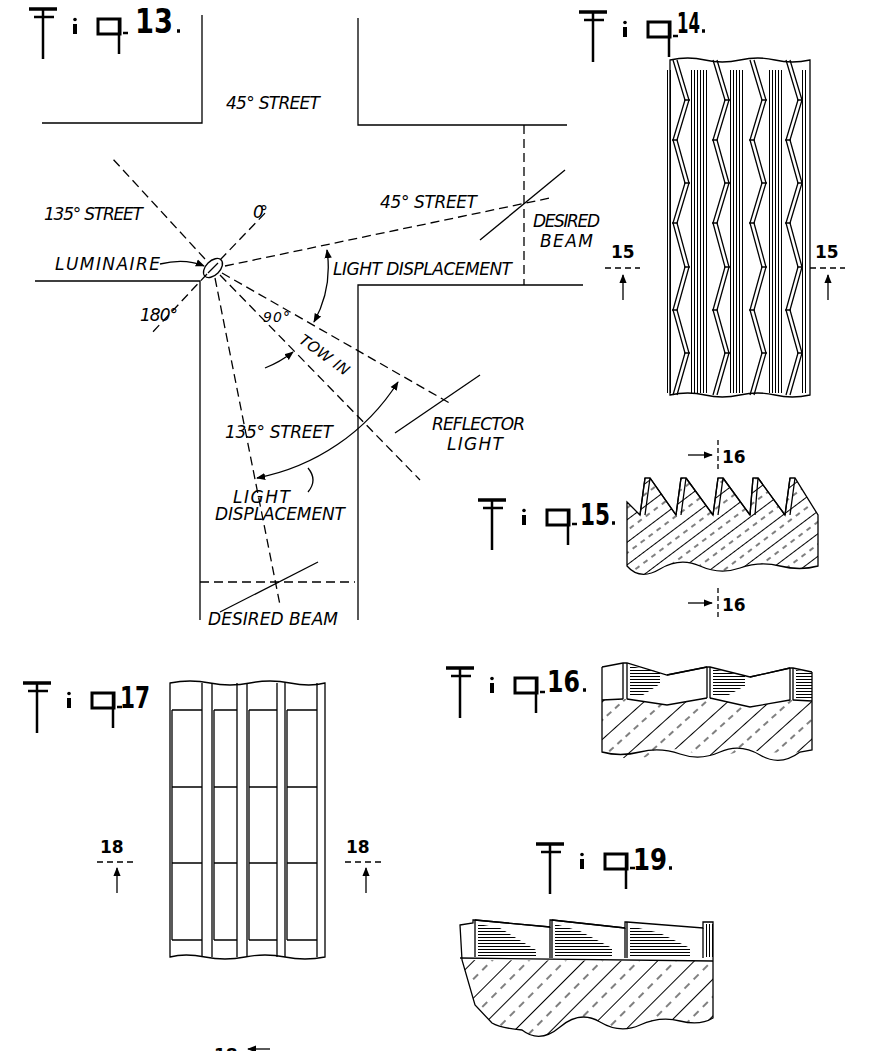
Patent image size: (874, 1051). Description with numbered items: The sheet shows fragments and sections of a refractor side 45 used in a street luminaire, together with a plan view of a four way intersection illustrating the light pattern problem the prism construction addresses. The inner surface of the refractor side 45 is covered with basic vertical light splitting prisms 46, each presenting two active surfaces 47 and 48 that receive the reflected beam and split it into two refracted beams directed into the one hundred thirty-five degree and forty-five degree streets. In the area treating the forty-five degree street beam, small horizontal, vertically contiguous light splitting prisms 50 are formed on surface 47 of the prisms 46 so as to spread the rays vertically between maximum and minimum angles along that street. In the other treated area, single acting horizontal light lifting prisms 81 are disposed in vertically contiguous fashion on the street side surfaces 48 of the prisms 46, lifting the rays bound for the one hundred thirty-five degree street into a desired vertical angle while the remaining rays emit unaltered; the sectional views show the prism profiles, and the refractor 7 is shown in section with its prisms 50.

In FIG. 16, the reflector 7 is at (730, 677).
In FIG. 14, the refractor side 45 is at (670, 337).
In FIG. 17, the refractor side 45 is at (284, 832).
In FIG. 14, the basic vertical light splitting prism 46 is at (741, 58).
In FIG. 15, the basic vertical light splitting prism 46 is at (679, 496).
In FIG. 17, the basic vertical light splitting prism 46 is at (243, 683).
In FIG. 14, the active surface 47 is at (680, 160).
In FIG. 15, the active surface 47 is at (643, 494).
In FIG. 17, the active surface 47 is at (283, 691).
In FIG. 14, the street side surface 48 is at (698, 68).
In FIG. 17, the street side surface 48 is at (303, 698).
In FIG. 19, the street side surface 48 is at (583, 927).
In FIG. 14, the horizontal light splitting prism 50 is at (683, 112).
In FIG. 15, the horizontal light splitting prism 50 is at (691, 481).
In FIG. 16, the horizontal light splitting prism 50 is at (684, 673).
In FIG. 17, the horizontal light lifting prism 81 is at (300, 756).
In FIG. 19, the horizontal light lifting prism 81 is at (650, 930).